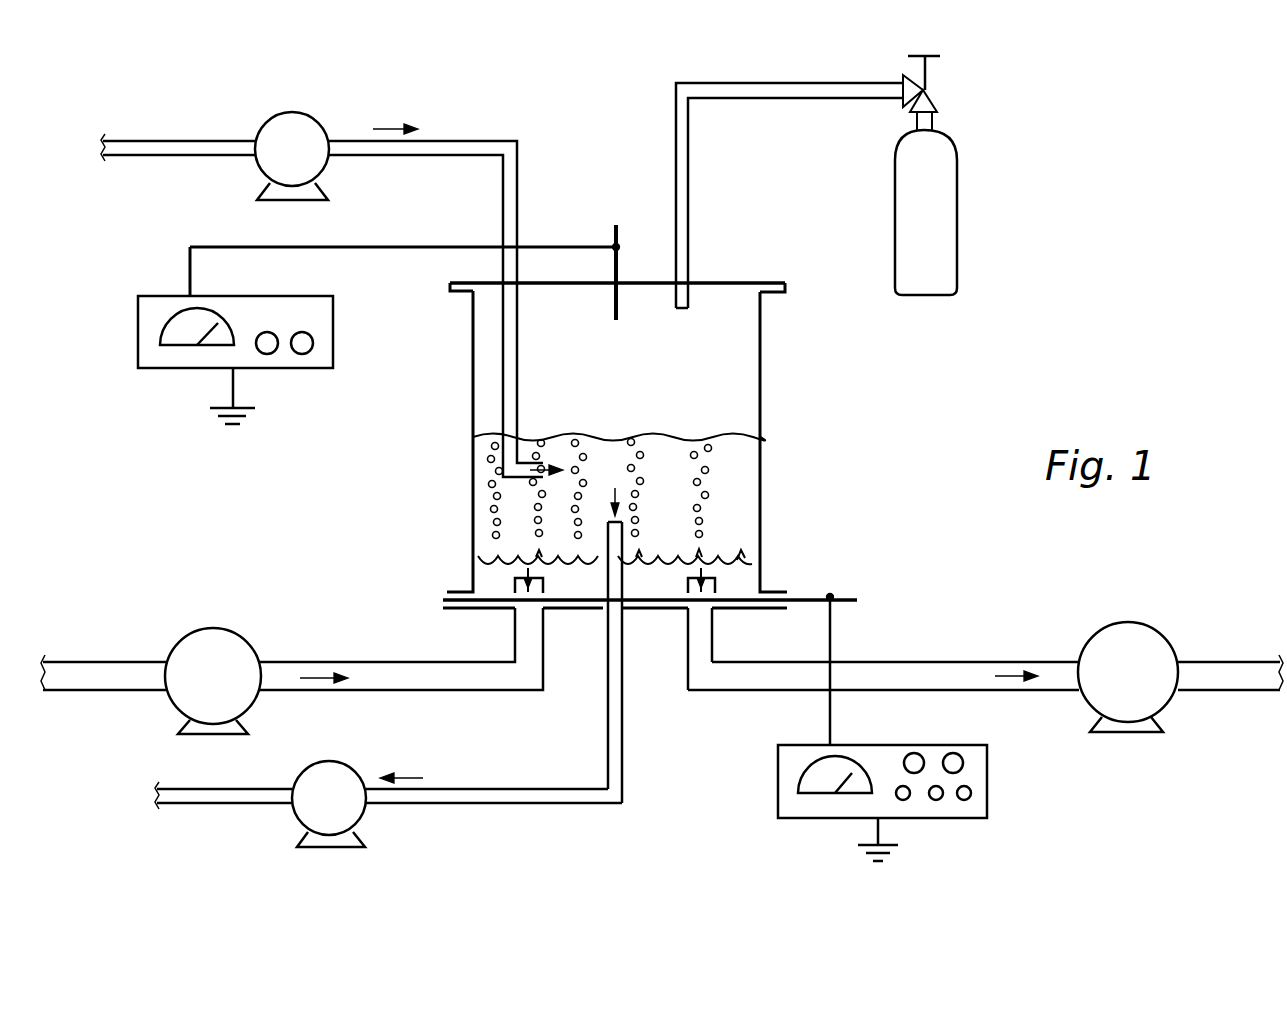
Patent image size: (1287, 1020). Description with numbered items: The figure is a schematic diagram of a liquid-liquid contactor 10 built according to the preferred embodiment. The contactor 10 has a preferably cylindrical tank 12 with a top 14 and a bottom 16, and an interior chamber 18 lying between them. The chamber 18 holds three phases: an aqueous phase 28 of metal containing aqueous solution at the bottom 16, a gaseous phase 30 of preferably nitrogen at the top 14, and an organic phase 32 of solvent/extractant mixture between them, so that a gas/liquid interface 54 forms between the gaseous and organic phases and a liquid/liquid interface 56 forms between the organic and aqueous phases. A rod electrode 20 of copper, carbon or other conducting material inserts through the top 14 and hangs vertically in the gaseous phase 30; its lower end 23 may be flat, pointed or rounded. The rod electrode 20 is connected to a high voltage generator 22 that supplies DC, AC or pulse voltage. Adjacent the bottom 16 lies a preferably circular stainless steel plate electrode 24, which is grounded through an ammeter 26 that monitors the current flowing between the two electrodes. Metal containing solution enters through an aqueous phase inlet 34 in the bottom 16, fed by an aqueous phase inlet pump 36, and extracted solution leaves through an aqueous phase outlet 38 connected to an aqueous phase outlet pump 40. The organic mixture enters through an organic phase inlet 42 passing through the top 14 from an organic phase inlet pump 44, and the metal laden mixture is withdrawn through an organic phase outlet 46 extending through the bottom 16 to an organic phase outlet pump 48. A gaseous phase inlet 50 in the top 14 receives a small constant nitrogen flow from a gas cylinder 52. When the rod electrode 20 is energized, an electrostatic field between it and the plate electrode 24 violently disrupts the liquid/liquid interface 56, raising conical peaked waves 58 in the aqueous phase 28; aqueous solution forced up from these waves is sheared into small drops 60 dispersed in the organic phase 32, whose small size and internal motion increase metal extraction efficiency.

The liquid-liquid contactor 10 is at (767, 502).
The tank 12 is at (637, 437).
The top 14 is at (714, 282).
The bottom 16 is at (667, 609).
The interior chamber 18 is at (710, 340).
The rod electrode 20 is at (620, 297).
The high voltage generator 22 is at (138, 350).
The end 23 is at (614, 322).
The plate electrode 24 is at (588, 592).
The ammeter 26 is at (987, 783).
The aqueous phase 28 is at (737, 580).
The gaseous phase 30 is at (740, 317).
The organic phase 32 is at (743, 463).
The aqueous phase inlet 34 is at (512, 582).
The aqueous phase inlet pump 36 is at (220, 645).
The aqueous phase outlet 38 is at (706, 593).
The aqueous phase outlet pump 40 is at (1147, 645).
The organic phase inlet 42 is at (507, 452).
The organic phase inlet pump 44 is at (312, 133).
The organic phase outlet 46 is at (611, 527).
The organic phase outlet pump 48 is at (352, 818).
The gaseous phase inlet 50 is at (678, 300).
The gas cylinder 52 is at (940, 168).
The gas/liquid interface 54 is at (735, 432).
The liquid/liquid interface 56 is at (748, 550).
The peaked waves 58 is at (495, 553).
The drops 60 is at (490, 503).